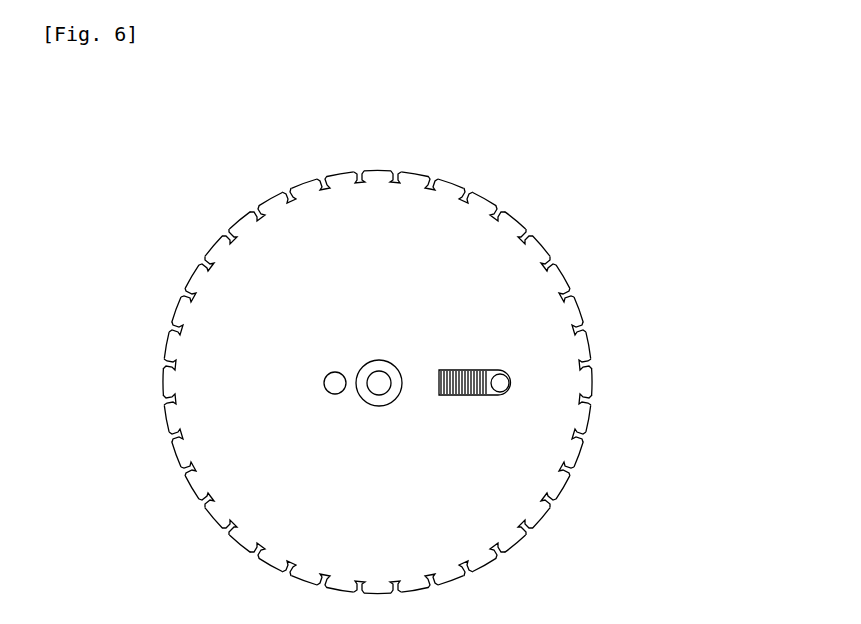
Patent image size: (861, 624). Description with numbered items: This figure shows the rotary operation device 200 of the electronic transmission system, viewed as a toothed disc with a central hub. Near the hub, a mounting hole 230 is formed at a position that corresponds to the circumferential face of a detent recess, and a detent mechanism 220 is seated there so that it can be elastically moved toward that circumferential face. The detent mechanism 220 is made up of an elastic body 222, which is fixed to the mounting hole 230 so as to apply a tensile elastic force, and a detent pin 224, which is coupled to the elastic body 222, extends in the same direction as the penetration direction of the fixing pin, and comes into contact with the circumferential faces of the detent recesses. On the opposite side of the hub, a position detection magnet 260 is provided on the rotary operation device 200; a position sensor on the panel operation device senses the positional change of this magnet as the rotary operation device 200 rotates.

The rotary operation device 200 is at (410, 197).
The detent mechanism 220 is at (622, 456).
The elastic body 222 is at (487, 371).
The detent pin 224 is at (510, 383).
The mounting hole 230 is at (472, 396).
The position detection magnet 260 is at (324, 382).